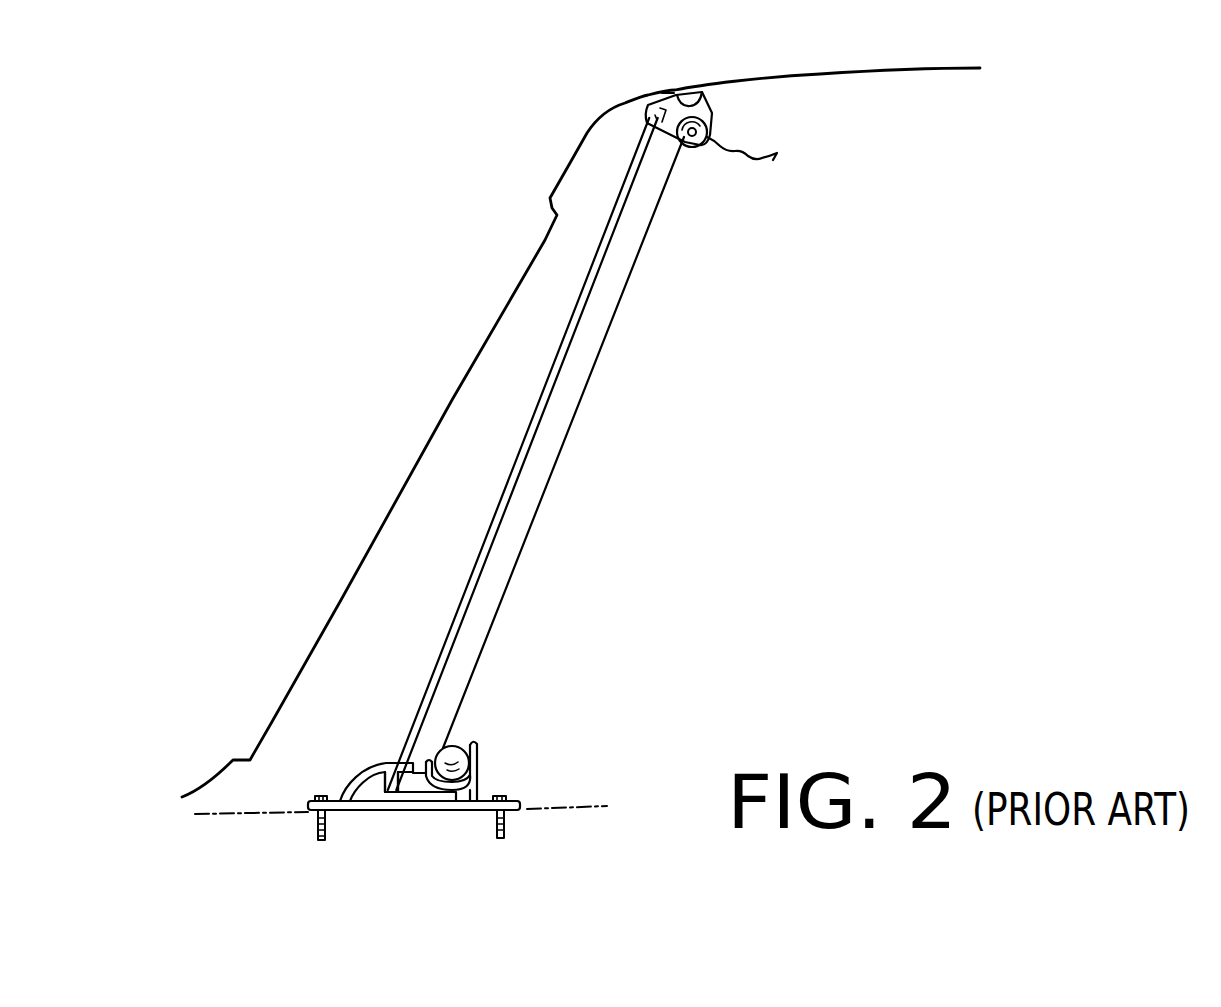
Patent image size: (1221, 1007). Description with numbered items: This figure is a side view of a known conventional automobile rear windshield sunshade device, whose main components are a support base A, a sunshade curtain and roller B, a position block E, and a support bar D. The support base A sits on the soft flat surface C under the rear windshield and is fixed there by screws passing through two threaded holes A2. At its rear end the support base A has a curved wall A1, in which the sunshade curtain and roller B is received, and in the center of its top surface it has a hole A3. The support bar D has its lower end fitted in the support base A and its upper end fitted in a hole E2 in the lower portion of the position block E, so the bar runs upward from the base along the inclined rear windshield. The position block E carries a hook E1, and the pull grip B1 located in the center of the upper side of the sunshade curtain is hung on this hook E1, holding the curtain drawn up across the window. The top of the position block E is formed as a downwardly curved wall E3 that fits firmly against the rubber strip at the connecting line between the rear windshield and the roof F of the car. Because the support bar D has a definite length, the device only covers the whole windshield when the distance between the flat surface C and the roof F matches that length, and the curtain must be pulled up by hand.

The support base A is at (405, 793).
The curved wall A1 is at (474, 747).
The threaded holes A2 is at (312, 813).
The hole A3 is at (392, 778).
The sunshade curtain and roller B is at (478, 767).
The pull grip B1 is at (755, 168).
The flat surface C is at (593, 806).
The support bar D is at (509, 479).
The position block E is at (633, 102).
The hook E1 is at (708, 115).
The hole E2 is at (665, 95).
The downwardly curved wall E3 is at (668, 92).
The roof F is at (694, 93).